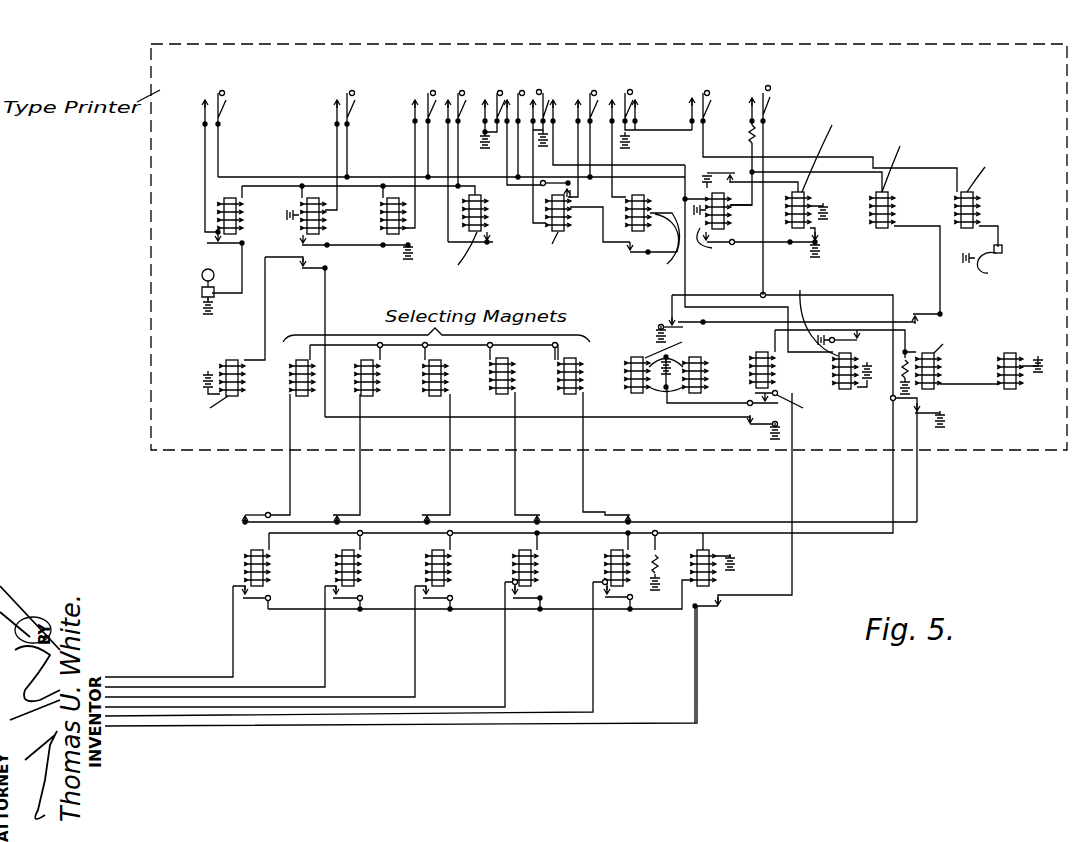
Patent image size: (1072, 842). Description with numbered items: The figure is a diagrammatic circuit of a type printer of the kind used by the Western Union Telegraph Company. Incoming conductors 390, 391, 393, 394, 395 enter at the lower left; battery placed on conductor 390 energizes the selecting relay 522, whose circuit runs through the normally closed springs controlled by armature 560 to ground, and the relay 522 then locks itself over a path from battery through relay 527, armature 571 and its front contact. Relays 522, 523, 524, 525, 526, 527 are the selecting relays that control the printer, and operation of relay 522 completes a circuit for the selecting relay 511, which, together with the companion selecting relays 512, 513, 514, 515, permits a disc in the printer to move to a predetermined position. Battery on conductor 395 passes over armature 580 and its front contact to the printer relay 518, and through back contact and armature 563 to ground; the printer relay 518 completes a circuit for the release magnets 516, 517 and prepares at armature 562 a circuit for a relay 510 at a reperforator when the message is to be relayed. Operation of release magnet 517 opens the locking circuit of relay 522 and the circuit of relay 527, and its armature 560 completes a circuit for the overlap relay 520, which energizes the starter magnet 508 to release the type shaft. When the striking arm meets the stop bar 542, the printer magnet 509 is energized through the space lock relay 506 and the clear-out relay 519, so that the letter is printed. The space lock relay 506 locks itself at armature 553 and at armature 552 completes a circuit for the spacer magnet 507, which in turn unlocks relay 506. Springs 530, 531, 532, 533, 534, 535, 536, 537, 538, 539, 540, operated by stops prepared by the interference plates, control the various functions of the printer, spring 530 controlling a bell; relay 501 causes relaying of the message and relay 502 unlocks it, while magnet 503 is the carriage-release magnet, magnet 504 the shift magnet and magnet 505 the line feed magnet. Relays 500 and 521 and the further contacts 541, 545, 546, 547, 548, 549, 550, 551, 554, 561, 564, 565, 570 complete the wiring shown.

The relay magnet 500 is at (240, 208).
The relay 501 is at (325, 216).
The relay 502 is at (387, 207).
The carriage-release magnet 503 is at (477, 195).
The shift magnet 504 is at (548, 218).
The line feed magnet 505 is at (646, 200).
The space lock relay 506 is at (726, 218).
The spacer magnet 507 is at (811, 202).
The starter magnet 508 is at (899, 198).
The printer magnet 509 is at (977, 196).
The relay 510 is at (244, 374).
The selecting relay 511 is at (288, 388).
The selecting magnet 512 is at (379, 375).
The selecting magnet 513 is at (447, 375).
The selecting magnet 514 is at (514, 373).
The selecting magnet 515 is at (582, 373).
The release magnet 516 is at (632, 385).
The release magnet 517 is at (707, 376).
The printer relay 518 is at (774, 366).
The clear out relay 519 is at (845, 390).
The overlap relay 520 is at (940, 372).
The relay magnet 521 is at (1022, 384).
The selecting relay 522 is at (269, 556).
The selecting relay 523 is at (360, 556).
The selecting relay 524 is at (450, 556).
The selecting relay 525 is at (540, 553).
The selecting relay 526 is at (629, 580).
The selecting relay 527 is at (715, 578).
The spring 530 is at (233, 161).
The spring 531 is at (357, 148).
The spring 532 is at (422, 146).
The spring 533 is at (465, 153).
The spring 534 is at (504, 106).
The spring 535 is at (520, 108).
The spring 536 is at (607, 150).
The spring 537 is at (594, 130).
The spring 538 is at (650, 130).
The spring 539 is at (823, 136).
The spring 540 is at (806, 188).
The signal lamp 541 is at (202, 292).
The stop bar 542 is at (991, 268).
The relay contact 545 is at (230, 244).
The relay contact 546 is at (325, 246).
The relay contact 547 is at (318, 269).
The relay contact 548 is at (400, 246).
The relay contact 549 is at (455, 241).
The relay contact 550 is at (541, 186).
The relay contact 551 is at (652, 243).
The armature 552 is at (718, 170).
The armature 553 is at (728, 244).
The relay contact 554 is at (818, 240).
The armature 560 is at (661, 325).
The relay contact 561 is at (752, 401).
The armature 562 is at (752, 426).
The armature 563 is at (850, 338).
The relay contact 564 is at (935, 313).
The relay contact 565 is at (938, 412).
The relay contact 570 is at (268, 514).
The armature 571 is at (256, 603).
The armature 580 is at (705, 607).
The conductor 390 is at (130, 677).
The conductor 391 is at (168, 688).
The conductor 393 is at (170, 708).
The conductor 394 is at (203, 718).
The conductor 395 is at (235, 727).